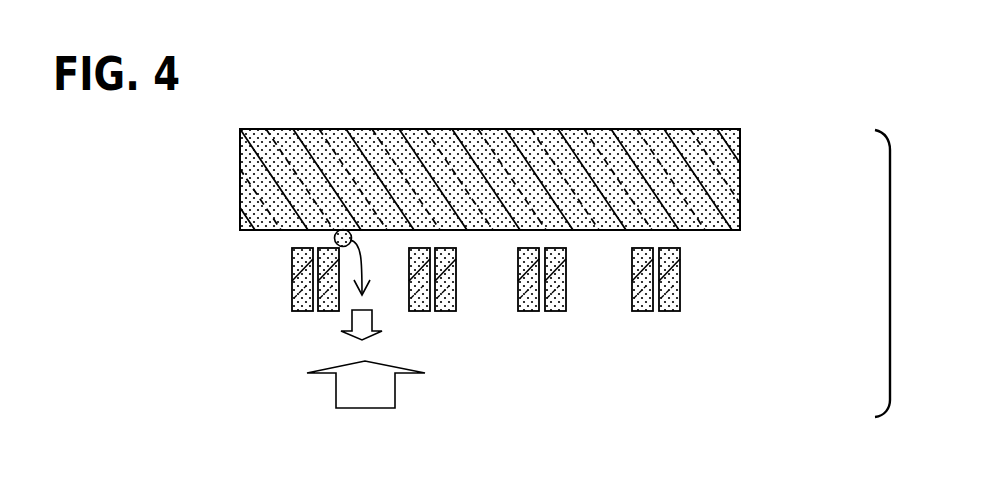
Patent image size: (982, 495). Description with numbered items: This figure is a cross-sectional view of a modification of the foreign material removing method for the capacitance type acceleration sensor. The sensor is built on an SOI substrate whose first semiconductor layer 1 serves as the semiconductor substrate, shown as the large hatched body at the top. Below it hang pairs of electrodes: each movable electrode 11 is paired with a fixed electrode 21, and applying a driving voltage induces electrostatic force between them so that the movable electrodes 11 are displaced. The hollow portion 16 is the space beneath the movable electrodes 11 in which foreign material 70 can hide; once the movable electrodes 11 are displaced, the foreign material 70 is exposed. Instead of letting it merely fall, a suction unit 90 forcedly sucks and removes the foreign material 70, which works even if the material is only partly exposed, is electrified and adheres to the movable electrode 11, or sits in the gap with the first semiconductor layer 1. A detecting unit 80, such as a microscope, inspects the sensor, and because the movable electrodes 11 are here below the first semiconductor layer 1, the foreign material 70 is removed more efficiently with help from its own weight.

The first semiconductor layer 1 is at (707, 187).
The hollow portion 16 is at (667, 238).
The movable electrode 11 is at (668, 306).
The fixed electrode 21 is at (643, 300).
The foreign material 70 is at (335, 239).
The suction unit 90 is at (365, 317).
The detecting unit 80 is at (352, 384).